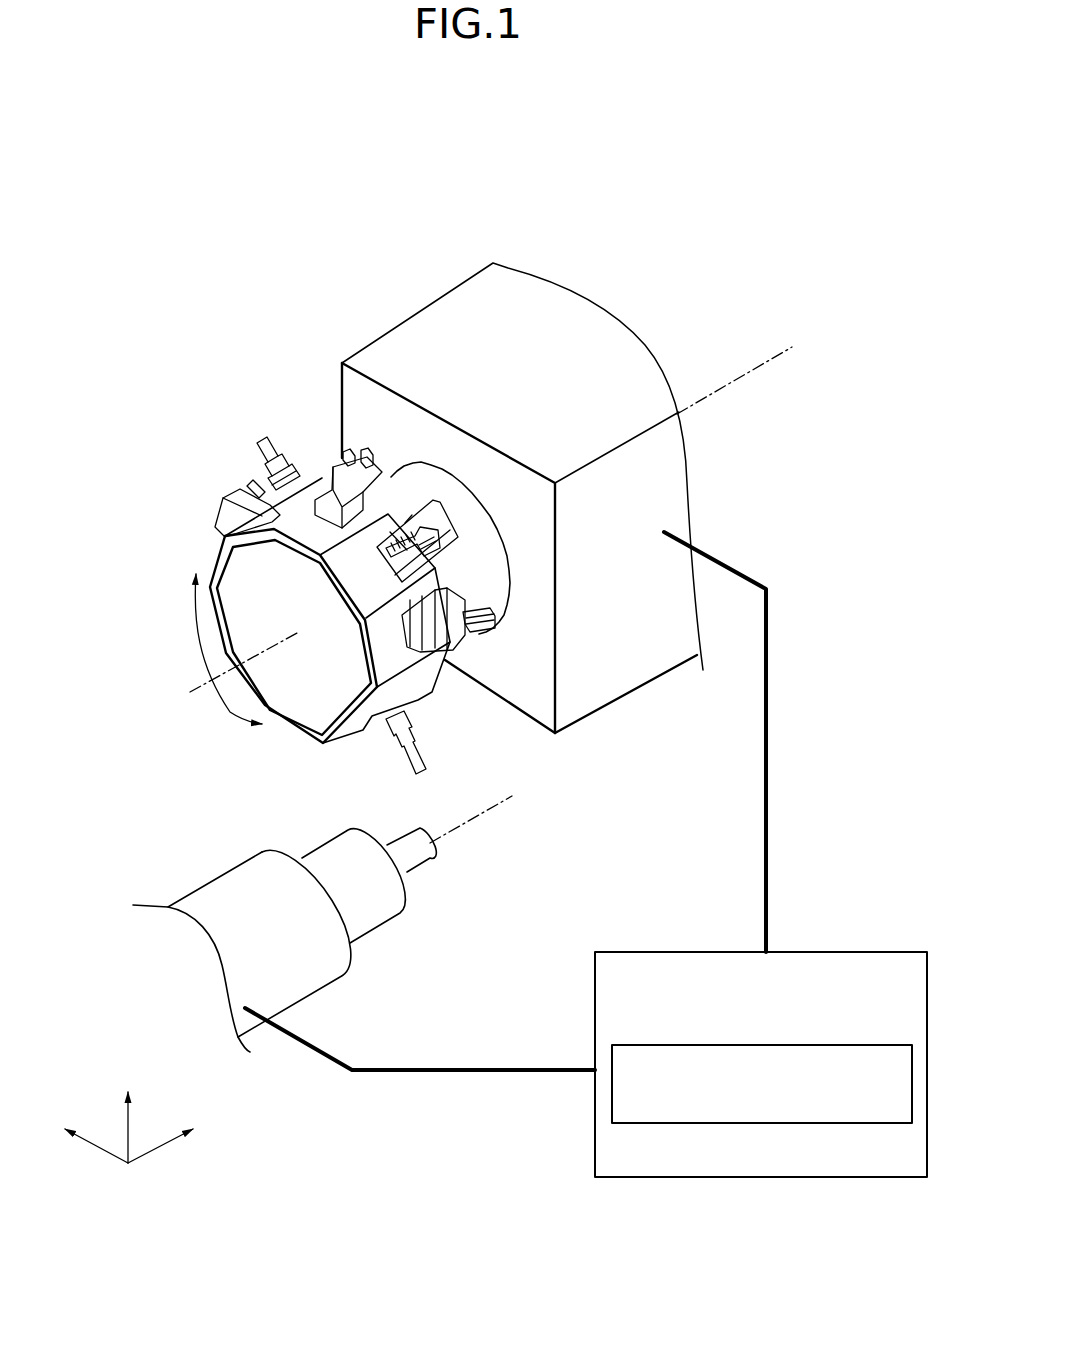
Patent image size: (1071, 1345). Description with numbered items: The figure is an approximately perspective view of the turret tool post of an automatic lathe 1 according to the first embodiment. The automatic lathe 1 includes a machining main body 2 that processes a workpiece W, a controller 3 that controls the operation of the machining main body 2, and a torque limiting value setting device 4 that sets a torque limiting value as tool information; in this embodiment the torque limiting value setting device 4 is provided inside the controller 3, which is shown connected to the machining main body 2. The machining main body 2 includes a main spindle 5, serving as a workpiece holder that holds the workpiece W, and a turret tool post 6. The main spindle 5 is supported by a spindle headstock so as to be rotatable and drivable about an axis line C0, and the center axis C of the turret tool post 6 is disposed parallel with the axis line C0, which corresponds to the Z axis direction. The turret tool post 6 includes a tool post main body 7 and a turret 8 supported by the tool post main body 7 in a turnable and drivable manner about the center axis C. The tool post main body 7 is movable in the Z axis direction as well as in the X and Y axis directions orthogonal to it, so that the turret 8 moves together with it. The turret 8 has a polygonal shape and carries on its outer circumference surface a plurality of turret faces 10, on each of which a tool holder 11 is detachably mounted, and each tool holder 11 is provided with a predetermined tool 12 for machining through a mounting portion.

The automatic lathe 1 is at (570, 175).
The machining main body 2 is at (125, 527).
The controller 3 is at (850, 952).
The torque limiting value setting device 4 is at (843, 1123).
The main spindle 5 is at (213, 877).
The turret tool post 6 is at (380, 313).
The tool post main body 7 is at (657, 675).
The turret 8 is at (450, 683).
The turret face 10 is at (364, 564).
The tool holder 11 is at (310, 477).
The tool 12 is at (257, 447).
The center axis C is at (212, 700).
The axis line C0 is at (505, 805).
The workpiece W is at (428, 862).